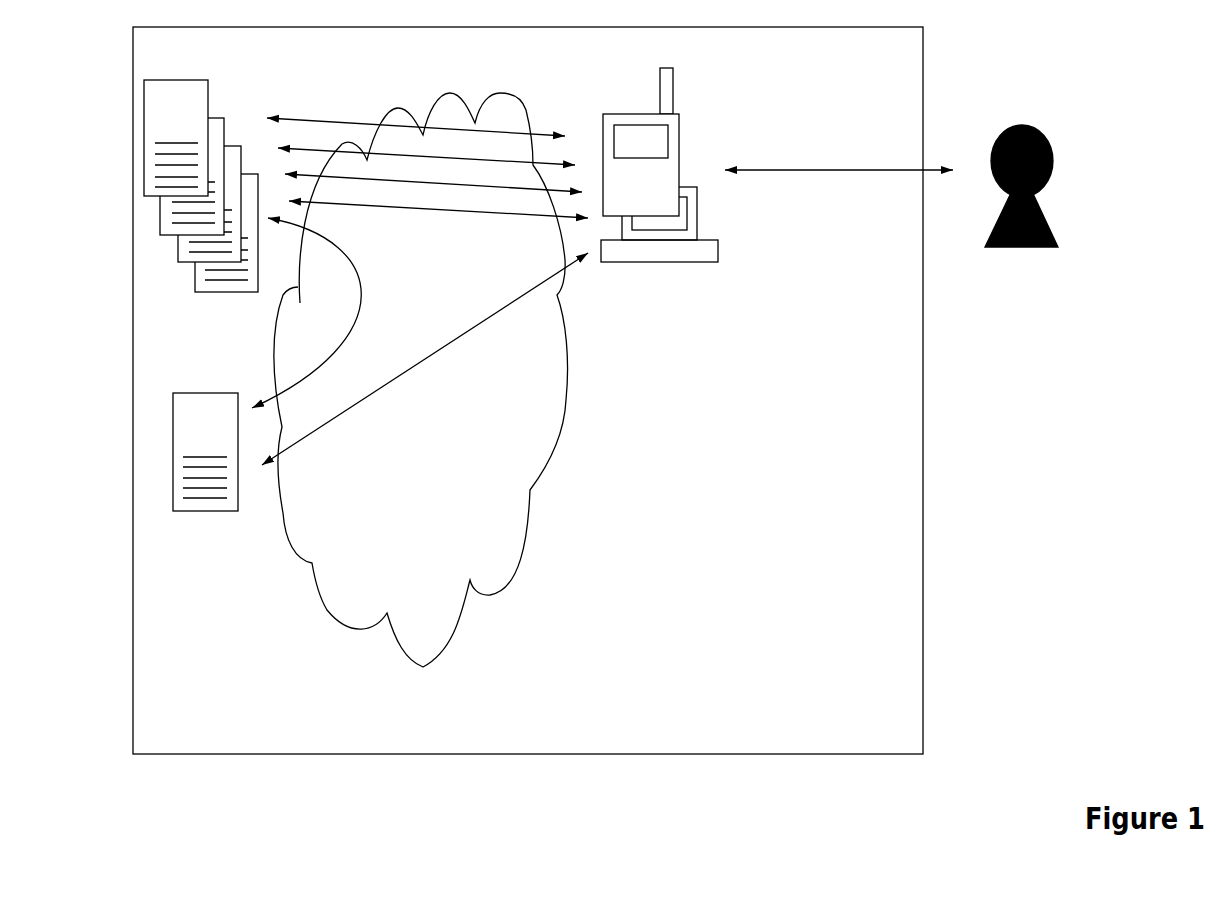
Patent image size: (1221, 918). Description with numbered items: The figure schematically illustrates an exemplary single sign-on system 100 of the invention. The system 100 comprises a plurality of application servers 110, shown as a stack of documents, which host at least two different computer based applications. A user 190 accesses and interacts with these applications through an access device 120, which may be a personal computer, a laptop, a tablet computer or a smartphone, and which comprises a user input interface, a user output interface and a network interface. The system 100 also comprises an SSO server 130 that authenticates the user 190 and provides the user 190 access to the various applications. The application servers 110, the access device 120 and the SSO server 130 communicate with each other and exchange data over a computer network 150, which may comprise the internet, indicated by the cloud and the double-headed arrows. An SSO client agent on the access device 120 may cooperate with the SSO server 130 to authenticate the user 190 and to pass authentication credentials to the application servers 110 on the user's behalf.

The system 100 is at (670, 753).
The application servers 110 is at (218, 98).
The access device 120 is at (630, 102).
The SSO server 130 is at (183, 522).
The computer network 150 is at (535, 543).
The user 190 is at (1067, 218).